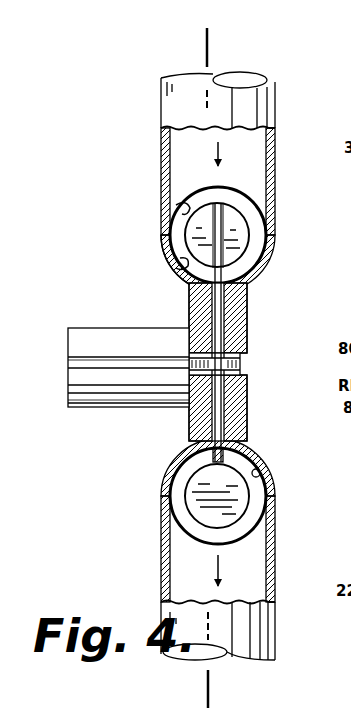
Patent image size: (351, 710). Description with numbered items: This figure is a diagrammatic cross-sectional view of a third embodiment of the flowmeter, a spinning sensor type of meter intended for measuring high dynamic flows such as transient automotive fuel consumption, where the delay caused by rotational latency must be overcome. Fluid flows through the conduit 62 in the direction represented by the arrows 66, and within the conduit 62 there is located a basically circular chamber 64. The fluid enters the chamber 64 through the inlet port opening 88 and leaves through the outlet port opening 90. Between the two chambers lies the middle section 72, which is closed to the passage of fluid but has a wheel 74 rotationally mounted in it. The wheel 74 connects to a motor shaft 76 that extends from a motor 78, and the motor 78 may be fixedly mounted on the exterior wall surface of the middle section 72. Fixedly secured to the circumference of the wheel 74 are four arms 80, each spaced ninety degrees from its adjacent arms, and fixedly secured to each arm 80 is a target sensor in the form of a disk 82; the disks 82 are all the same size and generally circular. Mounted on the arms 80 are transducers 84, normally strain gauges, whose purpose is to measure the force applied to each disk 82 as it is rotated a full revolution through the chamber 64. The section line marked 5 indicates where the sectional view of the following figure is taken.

The section line 5- 5 is at (198, 50).
The conduit 62 is at (162, 184).
The circular chamber 64 is at (188, 265).
The arrows 66 is at (212, 152).
The middle section 72 is at (247, 402).
The wheel 74 is at (247, 289).
The motor shaft 76 is at (240, 362).
The motor 78 is at (102, 328).
The arms 80 is at (255, 236).
The disk 82 is at (246, 218).
The transducers 84 is at (206, 452).
The inlet port opening 88 is at (174, 221).
The outlet port opening 90 is at (260, 473).